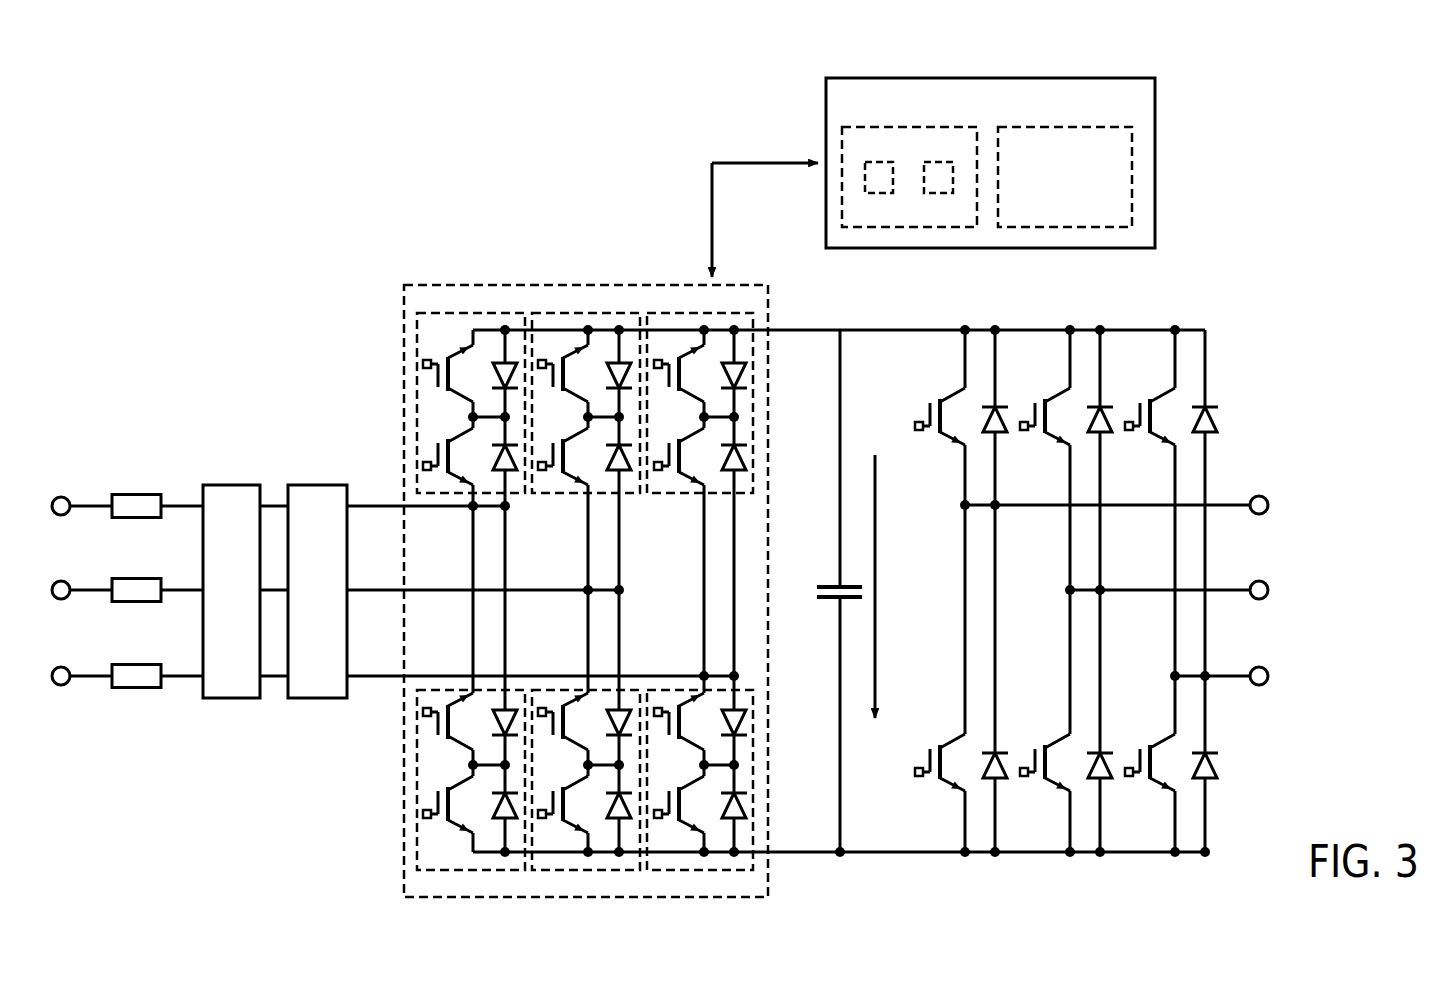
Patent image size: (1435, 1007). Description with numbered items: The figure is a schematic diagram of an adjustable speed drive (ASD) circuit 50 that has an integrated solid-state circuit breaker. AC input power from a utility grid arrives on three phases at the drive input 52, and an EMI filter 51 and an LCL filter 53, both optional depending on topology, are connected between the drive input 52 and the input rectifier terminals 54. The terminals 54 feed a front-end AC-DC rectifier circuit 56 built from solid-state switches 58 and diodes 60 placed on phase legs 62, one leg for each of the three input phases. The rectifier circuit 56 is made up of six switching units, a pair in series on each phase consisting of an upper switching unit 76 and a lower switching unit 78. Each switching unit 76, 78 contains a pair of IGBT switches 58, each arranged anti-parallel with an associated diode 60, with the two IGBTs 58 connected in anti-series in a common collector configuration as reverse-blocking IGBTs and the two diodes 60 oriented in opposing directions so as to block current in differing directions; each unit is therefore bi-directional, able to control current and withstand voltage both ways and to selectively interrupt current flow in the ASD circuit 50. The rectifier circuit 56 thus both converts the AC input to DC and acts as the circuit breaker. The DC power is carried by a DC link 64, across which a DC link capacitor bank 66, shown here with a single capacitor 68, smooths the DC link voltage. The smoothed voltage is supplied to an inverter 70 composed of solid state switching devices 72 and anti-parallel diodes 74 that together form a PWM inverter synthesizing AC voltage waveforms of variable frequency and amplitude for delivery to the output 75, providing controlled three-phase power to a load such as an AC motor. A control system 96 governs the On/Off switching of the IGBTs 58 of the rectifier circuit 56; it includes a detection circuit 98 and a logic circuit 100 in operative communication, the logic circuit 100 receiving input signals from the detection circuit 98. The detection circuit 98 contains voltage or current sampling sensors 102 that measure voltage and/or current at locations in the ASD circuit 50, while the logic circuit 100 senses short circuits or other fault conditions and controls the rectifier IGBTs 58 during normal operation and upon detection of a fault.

The ASD circuit 50 is at (711, 487).
The EMI filter 51 is at (228, 485).
The drive input 52 is at (88, 494).
The LCL filter 53 is at (313, 485).
The input rectifier terminals 54 is at (492, 516).
The rectifier circuit 56 is at (608, 278).
The solid-state switches 58 is at (458, 350).
The diodes 60 is at (742, 376).
The phase legs 62 is at (496, 615).
The DC link 64 is at (805, 853).
The DC link capacitor bank 66 is at (822, 548).
The capacitor 68 is at (826, 600).
The inverter 70 is at (1186, 285).
The solid state switching devices 72 is at (952, 392).
The anti-parallel diodes 74 is at (1000, 405).
The output 75 is at (1289, 525).
The upper switching unit 76 is at (480, 305).
The lower switching unit 78 is at (497, 878).
The control system 96 is at (990, 78).
The detection circuit 98 is at (912, 227).
The logic circuit 100 is at (1105, 127).
The sensors 102 is at (865, 178).